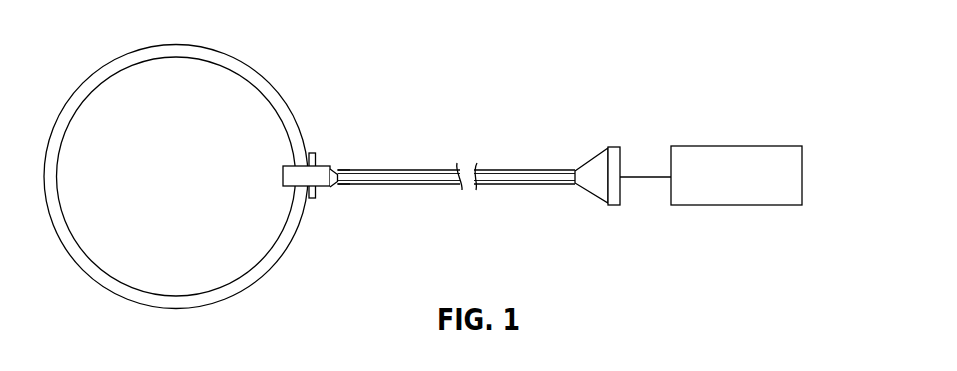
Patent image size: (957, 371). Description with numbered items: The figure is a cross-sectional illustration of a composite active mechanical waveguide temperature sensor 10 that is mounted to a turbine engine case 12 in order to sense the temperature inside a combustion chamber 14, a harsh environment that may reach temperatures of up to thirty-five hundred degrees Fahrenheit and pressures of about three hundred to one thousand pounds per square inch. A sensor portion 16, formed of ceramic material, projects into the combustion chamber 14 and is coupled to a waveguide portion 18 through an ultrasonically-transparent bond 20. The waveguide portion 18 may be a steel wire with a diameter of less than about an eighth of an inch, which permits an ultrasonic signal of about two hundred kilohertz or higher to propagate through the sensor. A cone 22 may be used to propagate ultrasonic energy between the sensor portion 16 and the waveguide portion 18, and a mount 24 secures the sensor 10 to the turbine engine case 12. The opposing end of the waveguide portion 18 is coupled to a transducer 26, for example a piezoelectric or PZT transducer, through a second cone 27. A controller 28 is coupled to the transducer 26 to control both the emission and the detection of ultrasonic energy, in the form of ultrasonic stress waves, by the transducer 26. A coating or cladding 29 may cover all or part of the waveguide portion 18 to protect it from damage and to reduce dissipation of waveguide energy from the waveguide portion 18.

The composite active mechanical waveguide temperature sensor 10 is at (535, 76).
The turbine engine case 12 is at (230, 58).
The combustion chamber 14 is at (173, 176).
The sensor portion 16 is at (287, 178).
The waveguide portion 18 is at (407, 170).
The ultrasonically-transparent bond 20 is at (336, 187).
The cone 22 is at (338, 170).
The mount 24 is at (316, 156).
The transducer 26 is at (613, 160).
The second cone 27 is at (595, 188).
The controller 28 is at (742, 206).
The coating or cladding 29 is at (542, 184).